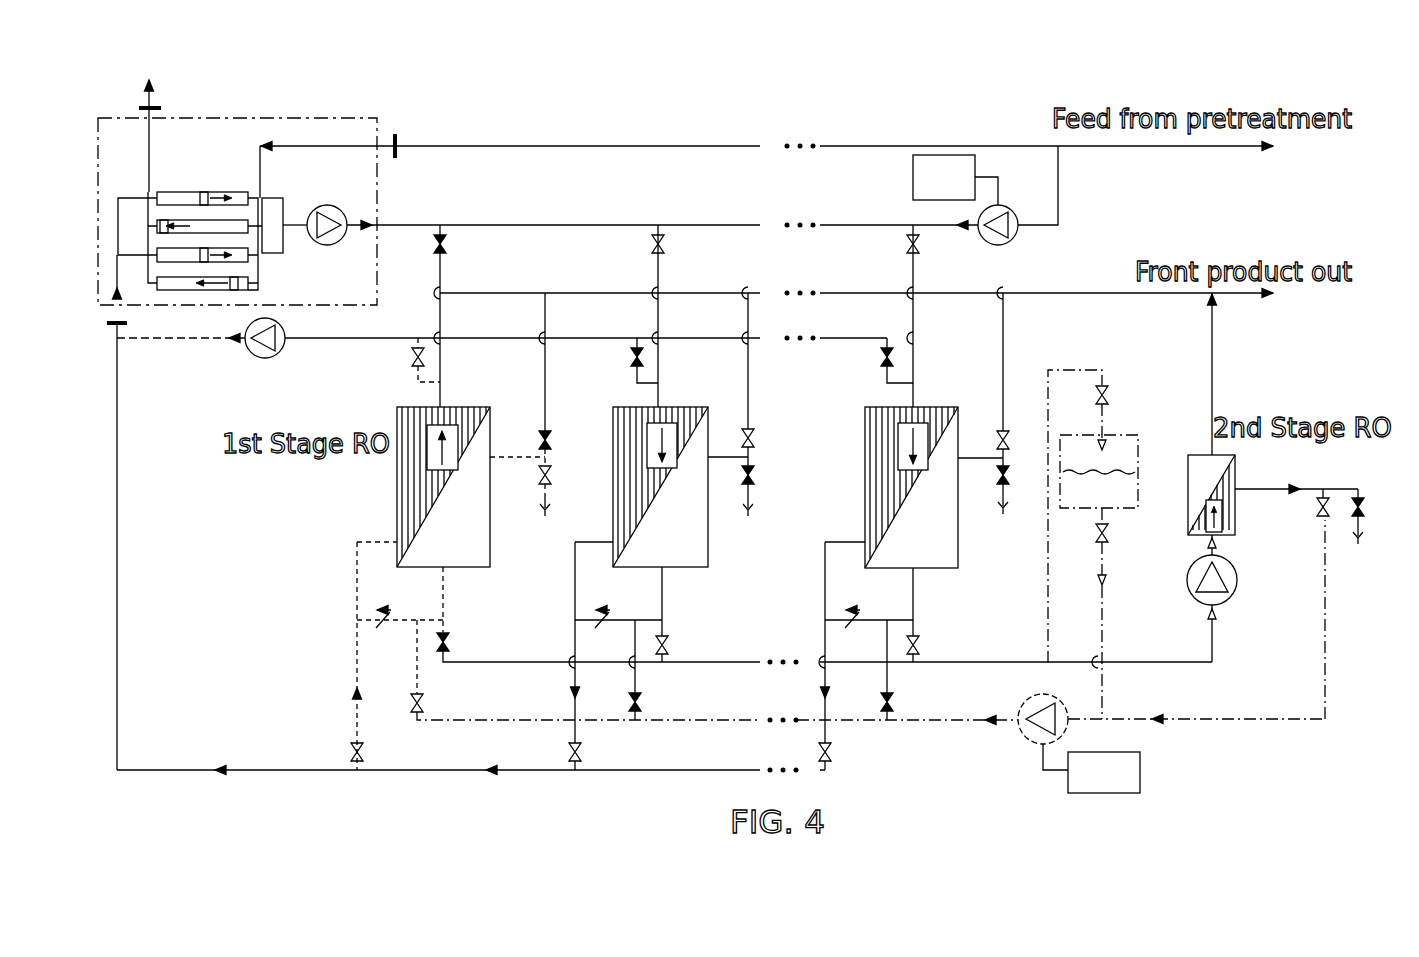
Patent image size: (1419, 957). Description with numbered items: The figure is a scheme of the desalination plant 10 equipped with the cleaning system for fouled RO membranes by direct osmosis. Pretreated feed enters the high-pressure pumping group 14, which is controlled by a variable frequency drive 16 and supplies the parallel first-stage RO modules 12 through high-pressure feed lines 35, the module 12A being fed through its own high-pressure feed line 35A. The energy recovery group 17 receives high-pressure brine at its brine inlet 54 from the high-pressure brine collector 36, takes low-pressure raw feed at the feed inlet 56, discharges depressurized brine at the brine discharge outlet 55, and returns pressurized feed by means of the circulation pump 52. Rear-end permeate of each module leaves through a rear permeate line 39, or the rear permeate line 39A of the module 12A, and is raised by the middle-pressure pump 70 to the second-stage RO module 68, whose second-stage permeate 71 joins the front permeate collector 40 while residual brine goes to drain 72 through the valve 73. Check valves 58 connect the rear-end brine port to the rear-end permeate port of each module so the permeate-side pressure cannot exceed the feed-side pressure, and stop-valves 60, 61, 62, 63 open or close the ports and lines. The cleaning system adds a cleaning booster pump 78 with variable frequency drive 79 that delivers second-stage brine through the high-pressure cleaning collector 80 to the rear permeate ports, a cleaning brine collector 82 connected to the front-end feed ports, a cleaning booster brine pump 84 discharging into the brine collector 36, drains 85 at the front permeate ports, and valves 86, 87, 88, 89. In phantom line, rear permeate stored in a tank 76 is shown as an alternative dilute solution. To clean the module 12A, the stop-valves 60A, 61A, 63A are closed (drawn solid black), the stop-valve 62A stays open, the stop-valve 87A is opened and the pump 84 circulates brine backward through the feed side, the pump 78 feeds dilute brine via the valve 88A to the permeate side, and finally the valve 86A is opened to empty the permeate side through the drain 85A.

The desalination plant 10 is at (824, 102).
The RO module 12 is at (708, 540).
The RO module 12A is at (397, 505).
The high-pressure pumping group 14 is at (1012, 210).
The variable frequency drive 16 is at (913, 177).
The energy recovery group 17 is at (355, 118).
The high-pressure feed line 35 is at (658, 270).
The high-pressure feed line 35A is at (440, 293).
The high-pressure brine collector 36 is at (170, 770).
The rear permeate line 39 is at (662, 597).
The rear permeate line 39A is at (443, 605).
The front permeate collector 40 is at (1052, 293).
The circulation pump 52 is at (340, 243).
The high-pressure brine inlet 54 is at (125, 330).
The low-pressure brine discharge outlet 55 is at (148, 105).
The low-pressure feed inlet 56 is at (395, 158).
The check valve 58 is at (392, 607).
The valve 60 is at (668, 244).
The stop-valve 60A is at (450, 244).
The valve 61 is at (672, 640).
The stop-valve 61A is at (452, 642).
The valve 62 is at (585, 750).
The stop-valve 62A is at (365, 750).
The valve 63 is at (758, 437).
The stop-valve 63A is at (555, 438).
The second-stage RO module 68 is at (1237, 462).
The middle-pressure pump 70 is at (1237, 585).
The second-stage permeate 71 is at (1212, 378).
The drain 72 is at (1365, 542).
The valve 73 is at (1370, 500).
The tank 76 is at (1093, 544).
The cleaning booster pump 78 is at (1020, 735).
The variable frequency drive 79 is at (1140, 770).
The high-pressure cleaning collector 80 is at (1300, 719).
The cleaning brine collector 82 is at (335, 338).
The cleaning booster brine pump 84 is at (255, 358).
The drain 85 is at (752, 510).
The drain 85A is at (556, 512).
The valve 86 is at (758, 470).
The valve 86A is at (553, 478).
The valve 87 is at (628, 350).
The stop-valve 87A is at (428, 355).
The valve 88 is at (645, 698).
The valve 88A is at (425, 697).
The valve 89 is at (1313, 502).